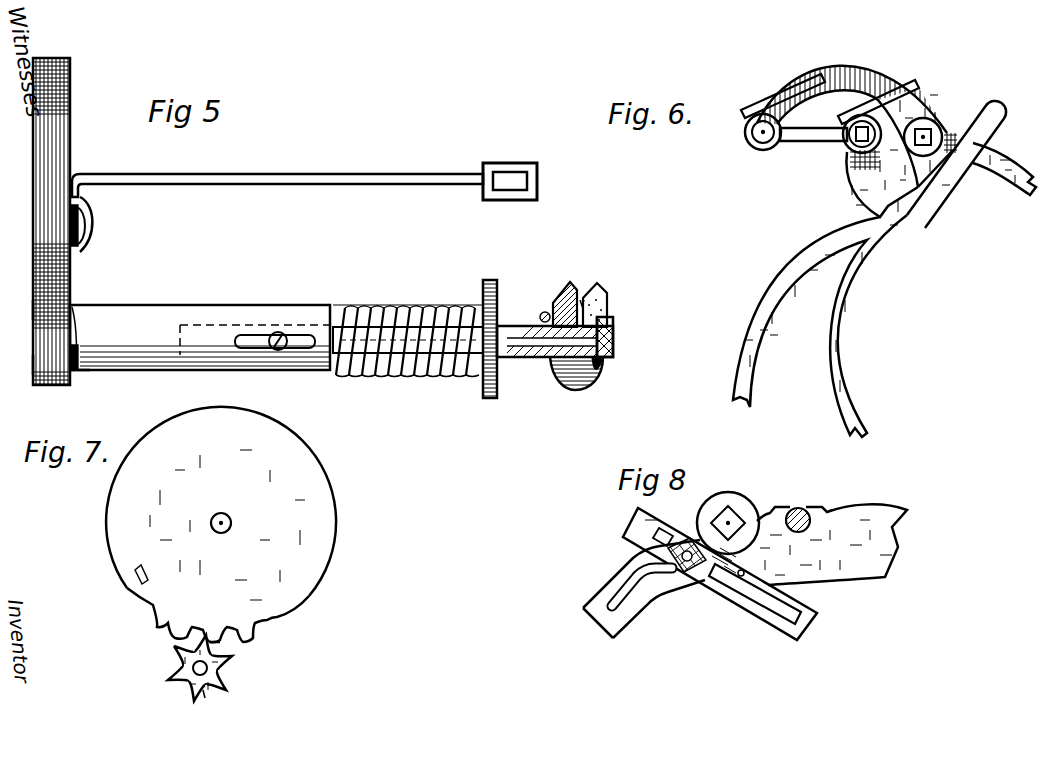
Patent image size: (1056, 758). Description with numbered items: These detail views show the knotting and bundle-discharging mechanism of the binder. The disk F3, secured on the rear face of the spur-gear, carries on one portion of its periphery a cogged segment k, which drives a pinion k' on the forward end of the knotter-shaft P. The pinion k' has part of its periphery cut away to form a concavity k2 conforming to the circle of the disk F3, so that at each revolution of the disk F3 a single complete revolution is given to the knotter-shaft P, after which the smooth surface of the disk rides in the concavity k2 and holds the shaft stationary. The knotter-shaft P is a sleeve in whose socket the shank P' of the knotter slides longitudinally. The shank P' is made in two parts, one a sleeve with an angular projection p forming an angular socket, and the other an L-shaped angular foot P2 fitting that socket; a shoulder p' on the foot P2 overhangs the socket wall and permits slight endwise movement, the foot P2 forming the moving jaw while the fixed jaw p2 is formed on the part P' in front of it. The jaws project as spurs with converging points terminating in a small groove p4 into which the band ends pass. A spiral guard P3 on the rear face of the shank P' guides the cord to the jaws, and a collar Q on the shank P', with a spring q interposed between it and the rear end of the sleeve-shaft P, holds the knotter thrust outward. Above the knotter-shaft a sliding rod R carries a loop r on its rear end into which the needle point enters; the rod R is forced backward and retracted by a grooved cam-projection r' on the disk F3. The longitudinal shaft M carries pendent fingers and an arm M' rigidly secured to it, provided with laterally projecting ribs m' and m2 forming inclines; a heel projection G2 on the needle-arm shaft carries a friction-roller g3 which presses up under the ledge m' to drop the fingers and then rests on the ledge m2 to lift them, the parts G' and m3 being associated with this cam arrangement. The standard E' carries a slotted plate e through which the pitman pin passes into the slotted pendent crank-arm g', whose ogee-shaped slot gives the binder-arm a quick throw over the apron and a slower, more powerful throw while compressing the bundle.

In FIG. 5, the disk F3 is at (70, 117).
In FIG. 7, the disk F3 is at (221, 524).
In FIG. 5, the sliding rod R is at (277, 174).
In FIG. 5, the loop r is at (510, 170).
In FIG. 5, the hook r' is at (87, 226).
In FIG. 5, the cogged segment k is at (22, 305).
In FIG. 7, the cogged segment k is at (219, 625).
In FIG. 5, the concavity k2 is at (19, 359).
In FIG. 7, the concavity k2 is at (205, 703).
In FIG. 5, the pinion k' is at (80, 383).
In FIG. 7, the pinion k' is at (183, 668).
In FIG. 5, the knotter-shaft P is at (200, 337).
In FIG. 5, the shank P' is at (408, 318).
In FIG. 5, the spring q is at (443, 325).
In FIG. 5, the collar Q is at (488, 325).
In FIG. 5, the angular projection p is at (568, 338).
In FIG. 5, the fixed jaw p2 is at (555, 306).
In FIG. 5, the angular foot P2 is at (610, 298).
In FIG. 5, the groove p4 is at (583, 300).
In FIG. 5, the shoulder p' is at (622, 321).
In FIG. 5, the spiral guard P3 is at (581, 377).
In FIG. 6, the arm M' is at (852, 111).
In FIG. 6, the cam ledge m' is at (783, 96).
In FIG. 6, the cam-ledge m2 is at (883, 91).
In FIG. 6, the longitudinal shaft M is at (955, 157).
In FIG. 6, the friction-roller g3 is at (760, 144).
In FIG. 6, the heel projection G2 is at (830, 142).
In FIG. 6, the arm G' is at (825, 293).
In FIG. 6, the tail m3 is at (1004, 171).
In FIG. 8, the slotted plate e is at (724, 574).
In FIG. 8, the slotted crank-arm g' is at (651, 581).
In FIG. 8, the standard E' is at (802, 538).